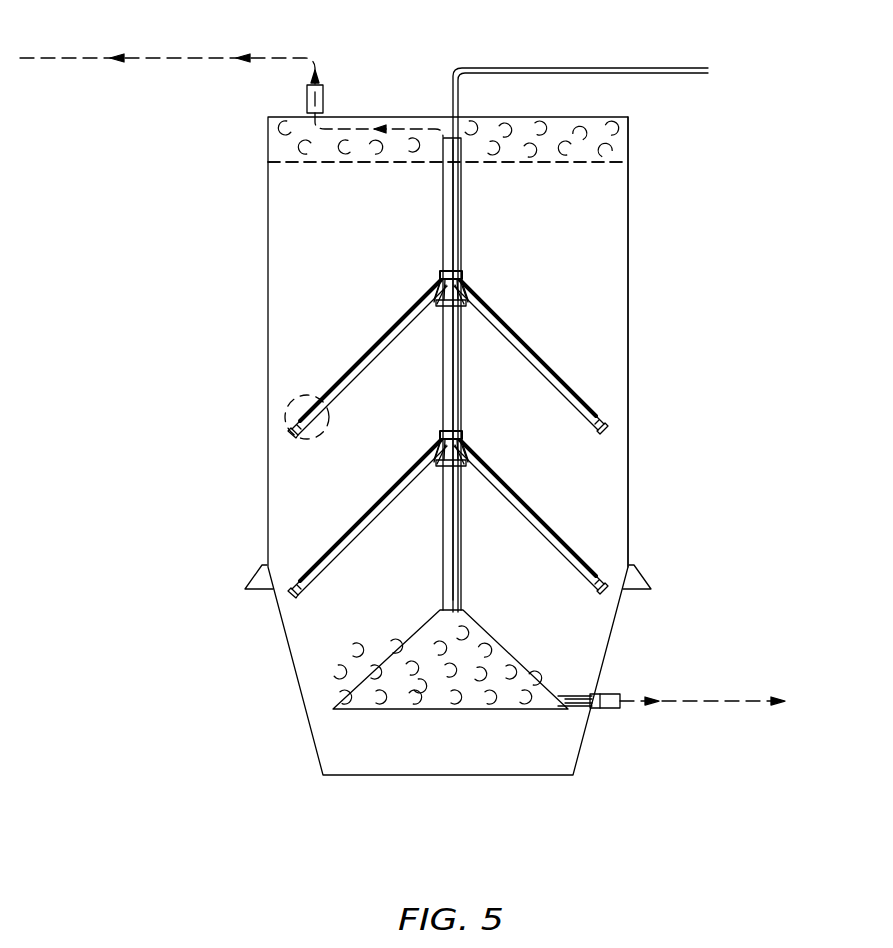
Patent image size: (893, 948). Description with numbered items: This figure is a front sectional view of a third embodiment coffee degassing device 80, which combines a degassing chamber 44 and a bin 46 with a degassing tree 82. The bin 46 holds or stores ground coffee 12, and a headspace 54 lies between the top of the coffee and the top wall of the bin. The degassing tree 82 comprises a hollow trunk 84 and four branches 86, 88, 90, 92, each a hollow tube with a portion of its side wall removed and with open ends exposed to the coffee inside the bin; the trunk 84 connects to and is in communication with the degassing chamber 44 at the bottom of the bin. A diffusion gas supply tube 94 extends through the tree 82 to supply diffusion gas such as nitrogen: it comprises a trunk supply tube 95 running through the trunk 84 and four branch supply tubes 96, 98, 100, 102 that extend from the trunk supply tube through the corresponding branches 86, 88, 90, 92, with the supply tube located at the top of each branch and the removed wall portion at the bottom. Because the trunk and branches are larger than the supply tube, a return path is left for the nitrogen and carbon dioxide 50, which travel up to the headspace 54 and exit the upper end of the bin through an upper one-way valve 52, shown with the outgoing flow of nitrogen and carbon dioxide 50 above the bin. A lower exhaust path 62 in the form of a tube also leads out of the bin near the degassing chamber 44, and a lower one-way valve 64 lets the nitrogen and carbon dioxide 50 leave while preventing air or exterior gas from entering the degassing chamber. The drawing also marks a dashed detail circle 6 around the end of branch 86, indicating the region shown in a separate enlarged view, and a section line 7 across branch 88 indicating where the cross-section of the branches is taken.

The ground coffee 12 is at (598, 218).
The degassing chamber 44 is at (393, 651).
The bin 46 is at (629, 318).
The nitrogen and carbon dioxide 50 is at (190, 57).
The upper one-way valve 52 is at (323, 100).
The headspace 54 is at (278, 143).
The lower exhaust path 62 is at (557, 698).
The lower one-way valve 64 is at (598, 705).
The degassing device 80 is at (753, 113).
The degassing tree 82 is at (387, 253).
The trunk 84 is at (441, 210).
The branch 86 is at (348, 405).
The branch 88 is at (586, 423).
The branch 90 is at (342, 585).
The branch 92 is at (588, 592).
The diffusion gas supply tube 94 is at (493, 70).
The trunk supply tube 95 is at (460, 192).
The branch supply tube 96 is at (390, 331).
The branch supply tube 98 is at (532, 342).
The branch supply tube 100 is at (380, 497).
The branch supply tube 102 is at (530, 513).
The section line 7- 7 is at (536, 374).
The detail Fig. 6 region 6 is at (300, 398).